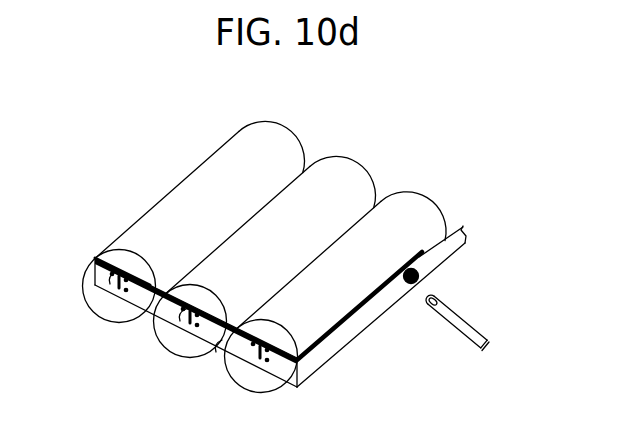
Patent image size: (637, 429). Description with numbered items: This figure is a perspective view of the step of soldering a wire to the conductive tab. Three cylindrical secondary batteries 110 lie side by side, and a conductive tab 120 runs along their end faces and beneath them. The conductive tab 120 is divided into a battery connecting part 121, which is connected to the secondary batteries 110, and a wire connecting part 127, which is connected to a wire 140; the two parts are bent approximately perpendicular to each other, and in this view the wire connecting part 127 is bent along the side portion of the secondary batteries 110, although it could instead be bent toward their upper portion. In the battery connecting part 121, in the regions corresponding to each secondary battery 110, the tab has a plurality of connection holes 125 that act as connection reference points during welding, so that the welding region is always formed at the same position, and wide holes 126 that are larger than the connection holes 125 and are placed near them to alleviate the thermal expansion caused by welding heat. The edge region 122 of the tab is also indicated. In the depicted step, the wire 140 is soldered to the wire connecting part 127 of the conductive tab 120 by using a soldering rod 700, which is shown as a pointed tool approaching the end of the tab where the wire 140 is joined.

The secondary battery 110 is at (277, 142).
The conductive tab 120 is at (338, 366).
The battery connecting part 121 is at (102, 272).
The edge of circuit board 122 is at (212, 336).
The connection hole 125 is at (113, 281).
The wide hole 126 is at (180, 318).
The wire connecting part 127 is at (363, 328).
The wire 140 is at (447, 256).
The soldering rod 700 is at (472, 323).